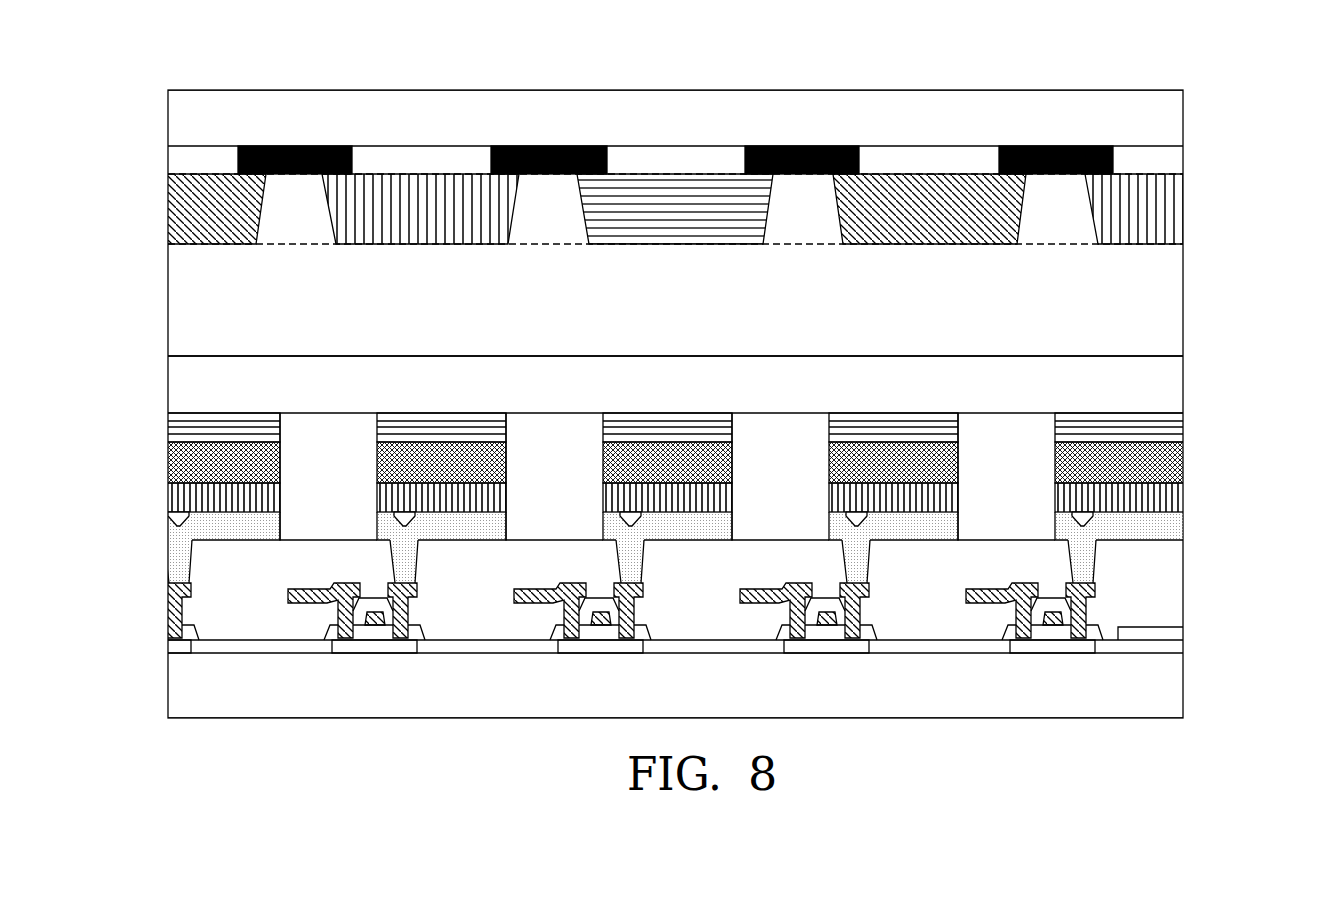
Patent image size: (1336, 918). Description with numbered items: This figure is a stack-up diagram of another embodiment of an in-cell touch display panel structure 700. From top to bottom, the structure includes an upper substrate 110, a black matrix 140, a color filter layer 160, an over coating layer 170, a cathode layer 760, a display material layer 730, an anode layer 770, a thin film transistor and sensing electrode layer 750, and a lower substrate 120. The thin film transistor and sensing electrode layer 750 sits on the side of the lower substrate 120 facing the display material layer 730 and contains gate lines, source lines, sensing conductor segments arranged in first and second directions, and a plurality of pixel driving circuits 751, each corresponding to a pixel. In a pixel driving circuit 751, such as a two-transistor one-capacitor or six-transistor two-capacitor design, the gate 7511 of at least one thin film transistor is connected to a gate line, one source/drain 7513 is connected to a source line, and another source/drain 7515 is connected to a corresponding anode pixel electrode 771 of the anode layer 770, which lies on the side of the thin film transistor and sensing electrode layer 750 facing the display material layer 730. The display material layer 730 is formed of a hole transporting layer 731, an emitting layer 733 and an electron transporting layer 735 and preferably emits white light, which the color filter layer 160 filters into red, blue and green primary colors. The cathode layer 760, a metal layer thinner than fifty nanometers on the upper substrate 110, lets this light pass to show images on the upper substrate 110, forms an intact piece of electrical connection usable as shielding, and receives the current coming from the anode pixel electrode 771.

The in-cell touch display panel structure 700 is at (153, 89).
The upper substrate 110 is at (1168, 112).
The black matrix 140 is at (1162, 155).
The color filter layer 160 is at (1140, 217).
The over coating layer 170 is at (1154, 280).
The cathode layer 760 is at (1097, 393).
The display material layer 730 is at (690, 459).
The electron transporting layer 735 is at (1126, 430).
The emitting layer 733 is at (1137, 468).
The hole transporting layer 731 is at (1137, 506).
The anode layer 770 is at (1147, 524).
The anode pixel electrode 771 is at (1067, 519).
The thin film transistor and sensing electrode layer 750 is at (671, 619).
The pixel driving circuit 751 is at (1048, 623).
The gate 7511 is at (1048, 623).
The source/drain 7513 is at (1018, 605).
The source/drain 7515 is at (1078, 638).
The lower substrate 120 is at (1185, 682).